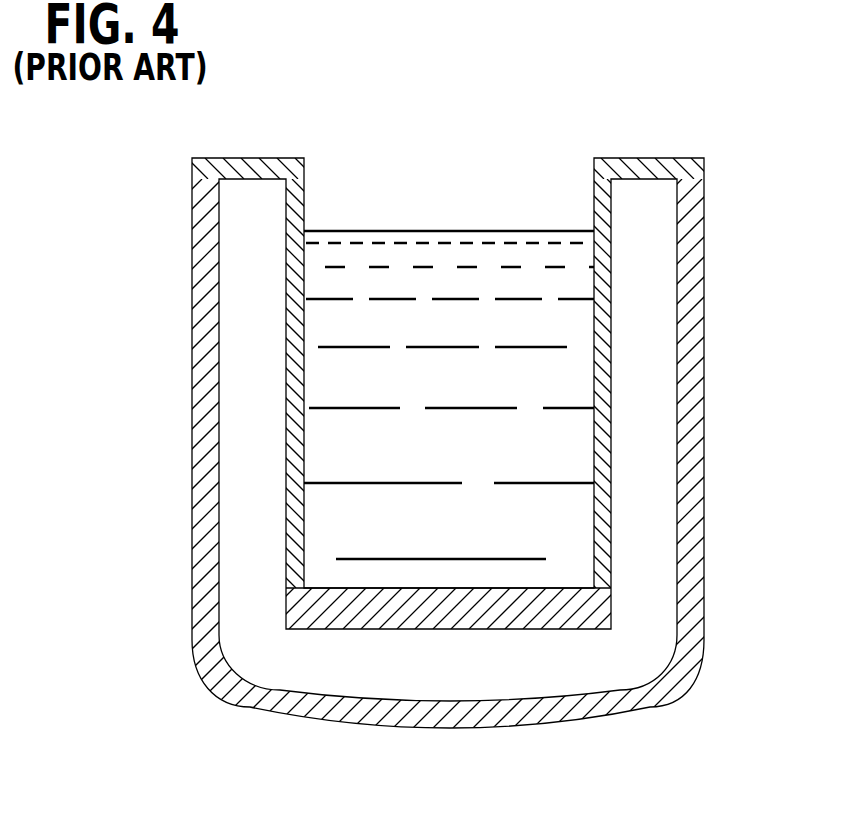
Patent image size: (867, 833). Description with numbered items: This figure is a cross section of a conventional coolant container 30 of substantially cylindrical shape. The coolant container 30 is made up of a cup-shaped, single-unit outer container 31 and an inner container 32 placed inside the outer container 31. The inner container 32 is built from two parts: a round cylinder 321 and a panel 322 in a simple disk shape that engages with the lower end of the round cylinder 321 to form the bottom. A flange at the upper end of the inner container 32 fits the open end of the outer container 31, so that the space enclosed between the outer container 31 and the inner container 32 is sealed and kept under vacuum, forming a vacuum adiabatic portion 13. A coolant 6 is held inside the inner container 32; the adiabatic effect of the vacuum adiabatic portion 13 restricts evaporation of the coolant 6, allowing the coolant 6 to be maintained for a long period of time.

The coolant container 30 is at (433, 375).
The outer container 31 is at (706, 300).
The inner container 32 is at (433, 404).
The round cylinder 321 is at (300, 478).
The panel 322 is at (350, 598).
The vacuum adiabatic portion 13 is at (662, 537).
The coolant 6 is at (457, 230).